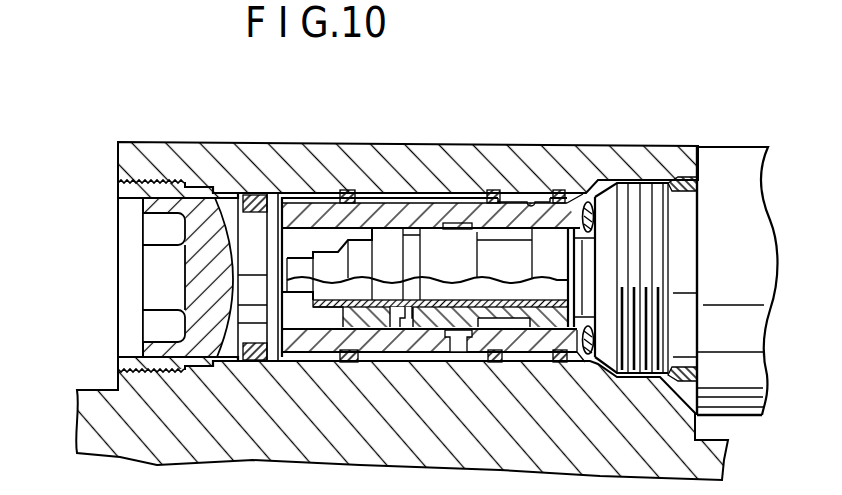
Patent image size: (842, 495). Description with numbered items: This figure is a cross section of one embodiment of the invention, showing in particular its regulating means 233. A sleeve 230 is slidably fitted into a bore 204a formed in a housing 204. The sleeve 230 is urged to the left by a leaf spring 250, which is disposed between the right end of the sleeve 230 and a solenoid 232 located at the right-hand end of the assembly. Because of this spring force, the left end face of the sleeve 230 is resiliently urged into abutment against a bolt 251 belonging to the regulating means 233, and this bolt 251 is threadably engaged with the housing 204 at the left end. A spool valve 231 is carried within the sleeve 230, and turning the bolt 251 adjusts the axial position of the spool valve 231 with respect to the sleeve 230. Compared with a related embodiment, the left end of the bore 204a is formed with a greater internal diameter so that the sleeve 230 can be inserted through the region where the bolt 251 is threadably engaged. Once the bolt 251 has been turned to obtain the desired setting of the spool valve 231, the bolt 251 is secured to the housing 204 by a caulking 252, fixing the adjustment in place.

The housing 204 is at (403, 144).
The bore 204a is at (536, 196).
The sleeve 230 is at (308, 196).
The spool valve 231 is at (340, 361).
The solenoid 232 is at (734, 147).
The regulating means 233 is at (109, 185).
The leaf spring 250 is at (589, 357).
The bolt 251 is at (200, 207).
The caulking 252 is at (118, 357).